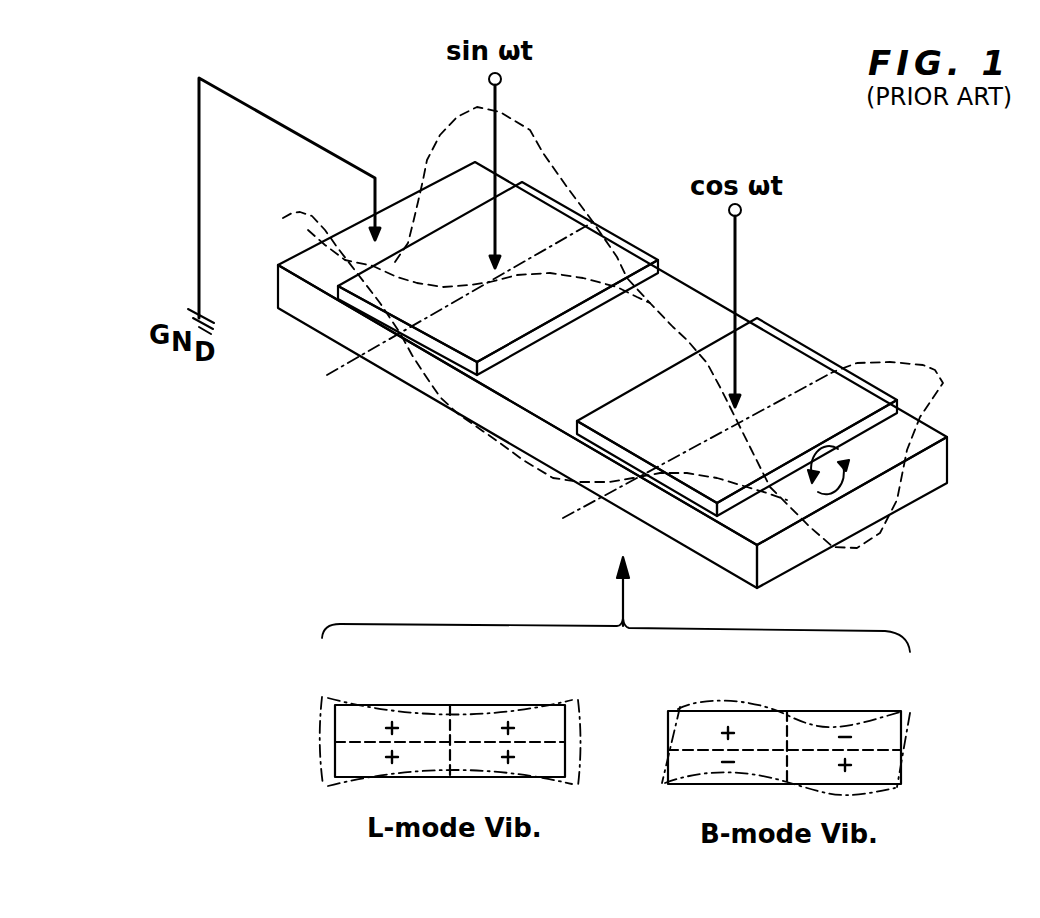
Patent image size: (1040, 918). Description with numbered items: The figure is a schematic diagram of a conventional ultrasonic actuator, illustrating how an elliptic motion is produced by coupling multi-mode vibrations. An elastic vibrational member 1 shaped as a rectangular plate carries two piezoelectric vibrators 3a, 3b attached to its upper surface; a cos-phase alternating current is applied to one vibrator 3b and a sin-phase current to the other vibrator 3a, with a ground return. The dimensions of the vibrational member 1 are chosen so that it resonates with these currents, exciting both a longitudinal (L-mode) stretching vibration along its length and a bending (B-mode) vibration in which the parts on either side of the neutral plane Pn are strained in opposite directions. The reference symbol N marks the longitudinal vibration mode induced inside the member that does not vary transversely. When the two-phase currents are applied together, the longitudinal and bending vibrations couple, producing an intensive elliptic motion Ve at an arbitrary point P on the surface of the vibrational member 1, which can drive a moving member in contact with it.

The elastic vibrational member 1 is at (517, 395).
The piezoelectric vibrator 3a is at (550, 217).
The piezoelectric vibrator 3b is at (798, 333).
The mode of the longitudinal vibration N is at (430, 457).
The elliptic motion Ve is at (845, 480).
The arbitrary point P is at (828, 447).
The neutral plane Pn is at (370, 740).